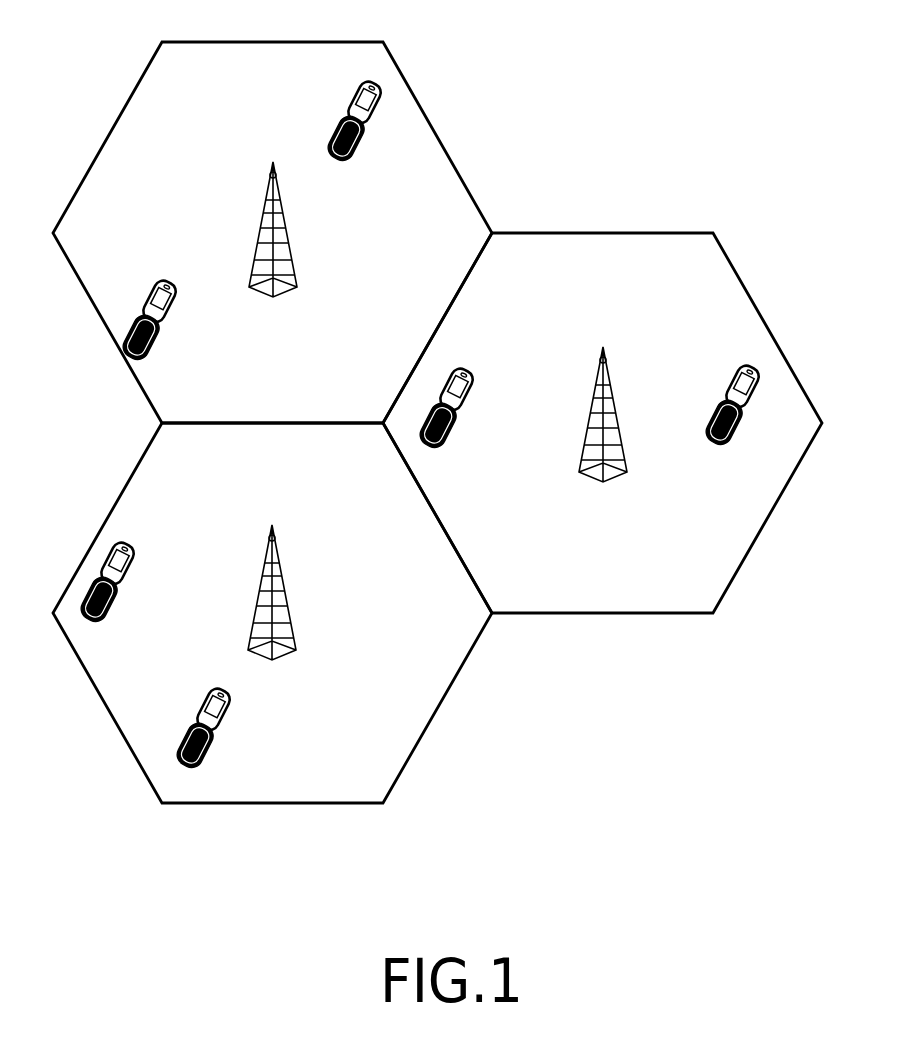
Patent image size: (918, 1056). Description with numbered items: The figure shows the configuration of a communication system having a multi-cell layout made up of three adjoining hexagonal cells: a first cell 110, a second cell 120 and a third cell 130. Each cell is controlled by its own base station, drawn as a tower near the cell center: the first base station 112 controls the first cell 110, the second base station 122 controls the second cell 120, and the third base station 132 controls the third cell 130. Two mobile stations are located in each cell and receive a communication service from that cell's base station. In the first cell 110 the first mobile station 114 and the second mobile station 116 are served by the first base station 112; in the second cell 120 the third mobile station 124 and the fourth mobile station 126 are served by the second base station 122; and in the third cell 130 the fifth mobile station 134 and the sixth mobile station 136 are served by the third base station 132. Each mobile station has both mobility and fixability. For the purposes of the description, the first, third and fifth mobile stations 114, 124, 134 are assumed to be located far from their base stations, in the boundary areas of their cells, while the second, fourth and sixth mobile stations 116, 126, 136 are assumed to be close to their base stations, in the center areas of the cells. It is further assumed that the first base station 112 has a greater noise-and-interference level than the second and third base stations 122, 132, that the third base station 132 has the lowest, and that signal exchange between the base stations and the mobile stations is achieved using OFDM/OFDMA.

The cell #1 110 is at (108, 133).
The cell #2 120 is at (106, 515).
The cell #3 130 is at (773, 525).
The BS1 112 is at (288, 236).
The BS2 122 is at (288, 597).
The BS3 132 is at (620, 429).
The MS1 114 is at (168, 344).
The MS2 116 is at (375, 147).
The MS3 124 is at (123, 608).
The MS4 126 is at (218, 755).
The MS5 134 is at (463, 435).
The MS6 136 is at (750, 431).